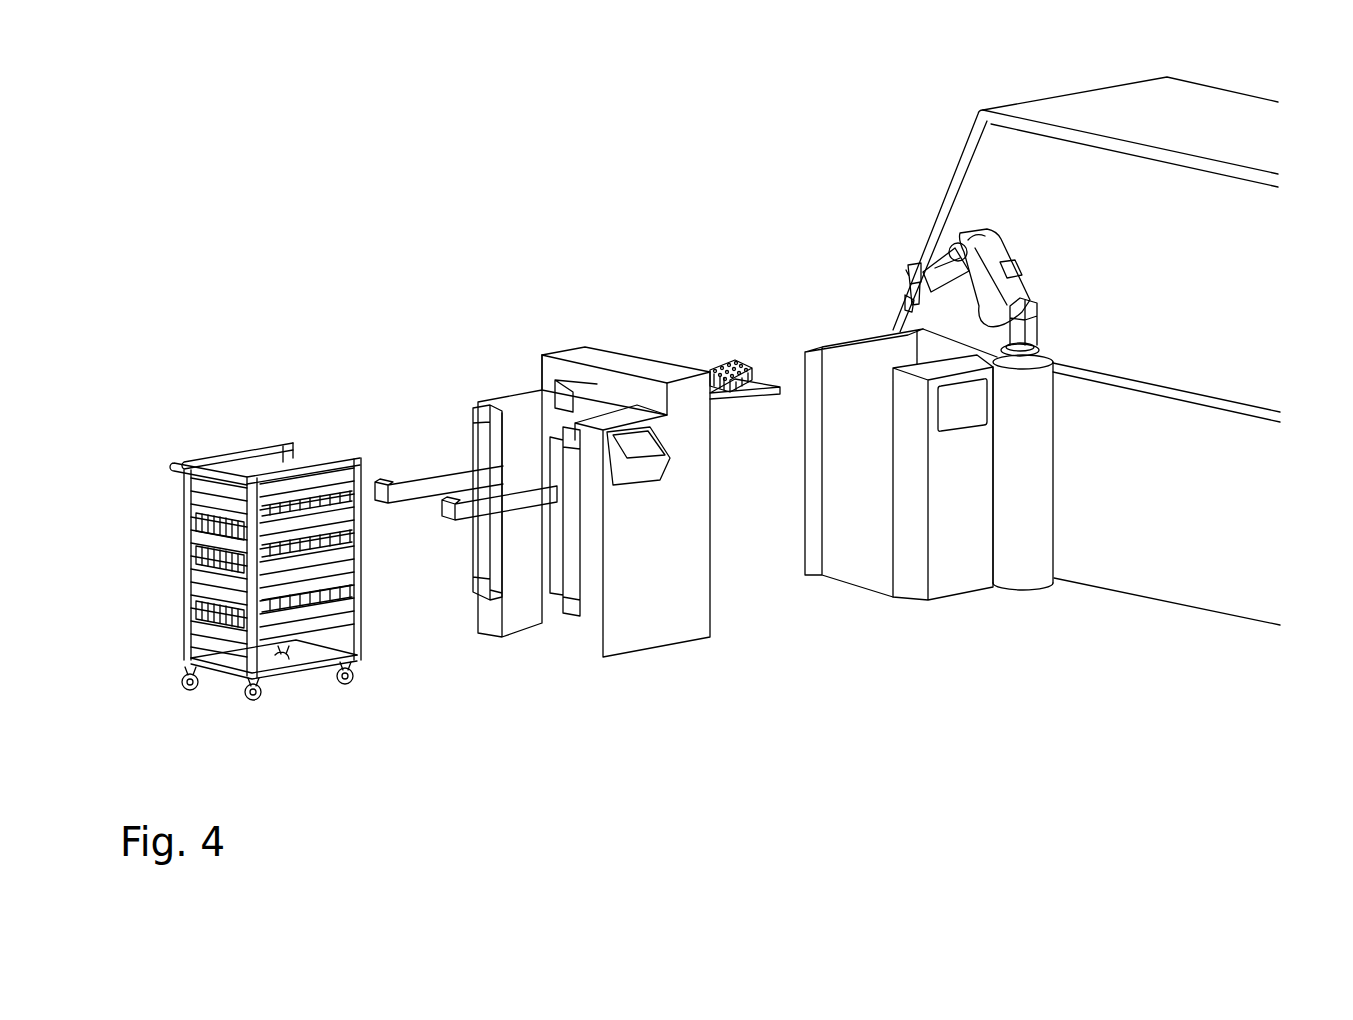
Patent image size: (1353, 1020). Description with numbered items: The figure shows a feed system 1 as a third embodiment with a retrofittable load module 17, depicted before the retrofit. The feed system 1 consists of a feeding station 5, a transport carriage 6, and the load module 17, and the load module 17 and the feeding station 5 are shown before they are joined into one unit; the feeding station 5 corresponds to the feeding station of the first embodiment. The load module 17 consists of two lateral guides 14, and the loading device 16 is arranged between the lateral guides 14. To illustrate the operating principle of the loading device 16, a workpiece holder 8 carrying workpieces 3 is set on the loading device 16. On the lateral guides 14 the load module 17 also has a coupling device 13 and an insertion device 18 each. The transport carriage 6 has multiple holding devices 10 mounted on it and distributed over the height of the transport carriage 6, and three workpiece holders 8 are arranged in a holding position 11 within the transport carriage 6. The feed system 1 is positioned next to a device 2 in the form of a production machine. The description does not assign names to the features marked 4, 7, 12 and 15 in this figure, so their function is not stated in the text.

The feed system 1 is at (392, 252).
The device 2 is at (1296, 305).
The workpieces 3 is at (720, 363).
The robot 4 is at (958, 347).
The feeding station 5 is at (975, 508).
The transport carriage 6 is at (307, 670).
The robot pedestal 7 is at (1030, 368).
The workpiece holder 8 is at (200, 523).
The holding devices 10 is at (193, 478).
The holding position 11 is at (376, 527).
The transfer station 12 is at (535, 648).
The coupling device 13 is at (488, 577).
The lateral guides 14 is at (500, 390).
The gripper tool 15 is at (915, 262).
The loading device 16 is at (740, 402).
The load module 17 is at (550, 332).
The insertion device 18 is at (470, 500).